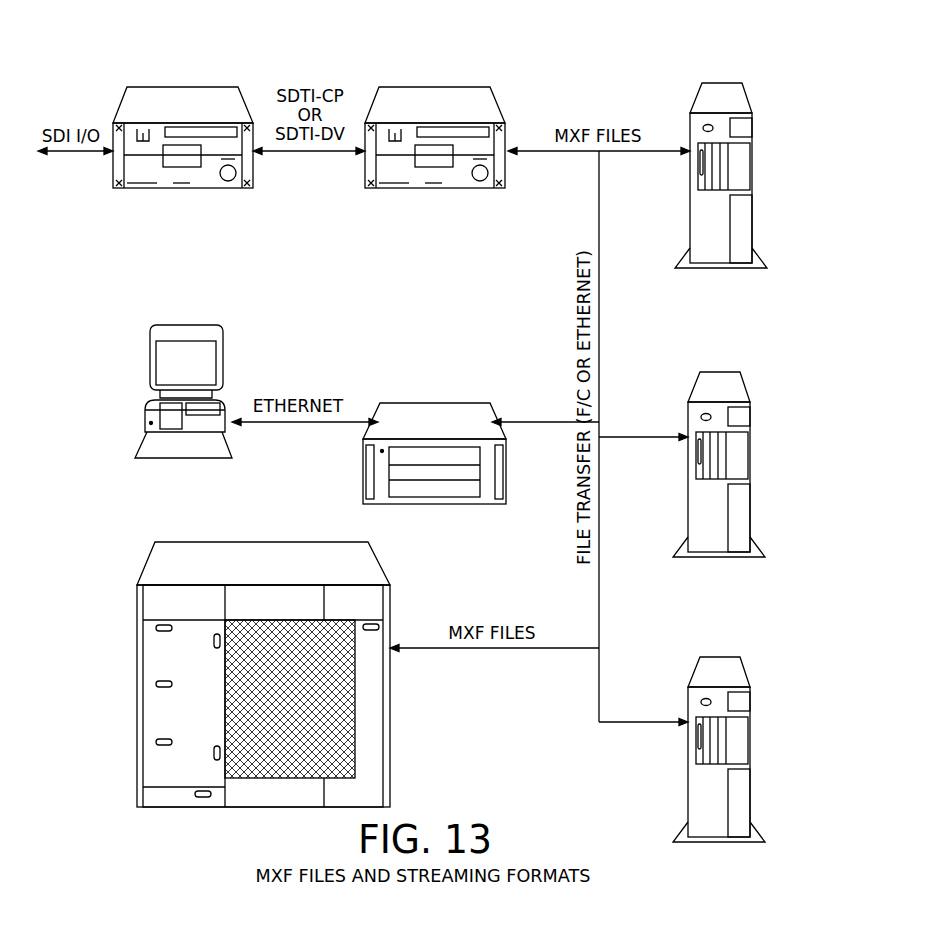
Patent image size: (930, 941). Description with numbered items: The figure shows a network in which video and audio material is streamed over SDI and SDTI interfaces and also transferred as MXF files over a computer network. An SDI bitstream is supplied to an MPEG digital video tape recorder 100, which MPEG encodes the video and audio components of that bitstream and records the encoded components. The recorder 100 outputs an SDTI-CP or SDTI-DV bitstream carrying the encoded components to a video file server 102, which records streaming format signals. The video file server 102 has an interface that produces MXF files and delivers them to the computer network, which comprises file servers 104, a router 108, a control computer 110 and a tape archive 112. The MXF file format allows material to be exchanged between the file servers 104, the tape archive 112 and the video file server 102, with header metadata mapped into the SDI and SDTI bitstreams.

The MPEG digital video tape recorder 100 is at (215, 87).
The video file server 102 is at (469, 87).
The file servers 104 is at (752, 125).
The router 108 is at (481, 505).
The control computer 110 is at (223, 348).
The tape archive 112 is at (390, 786).